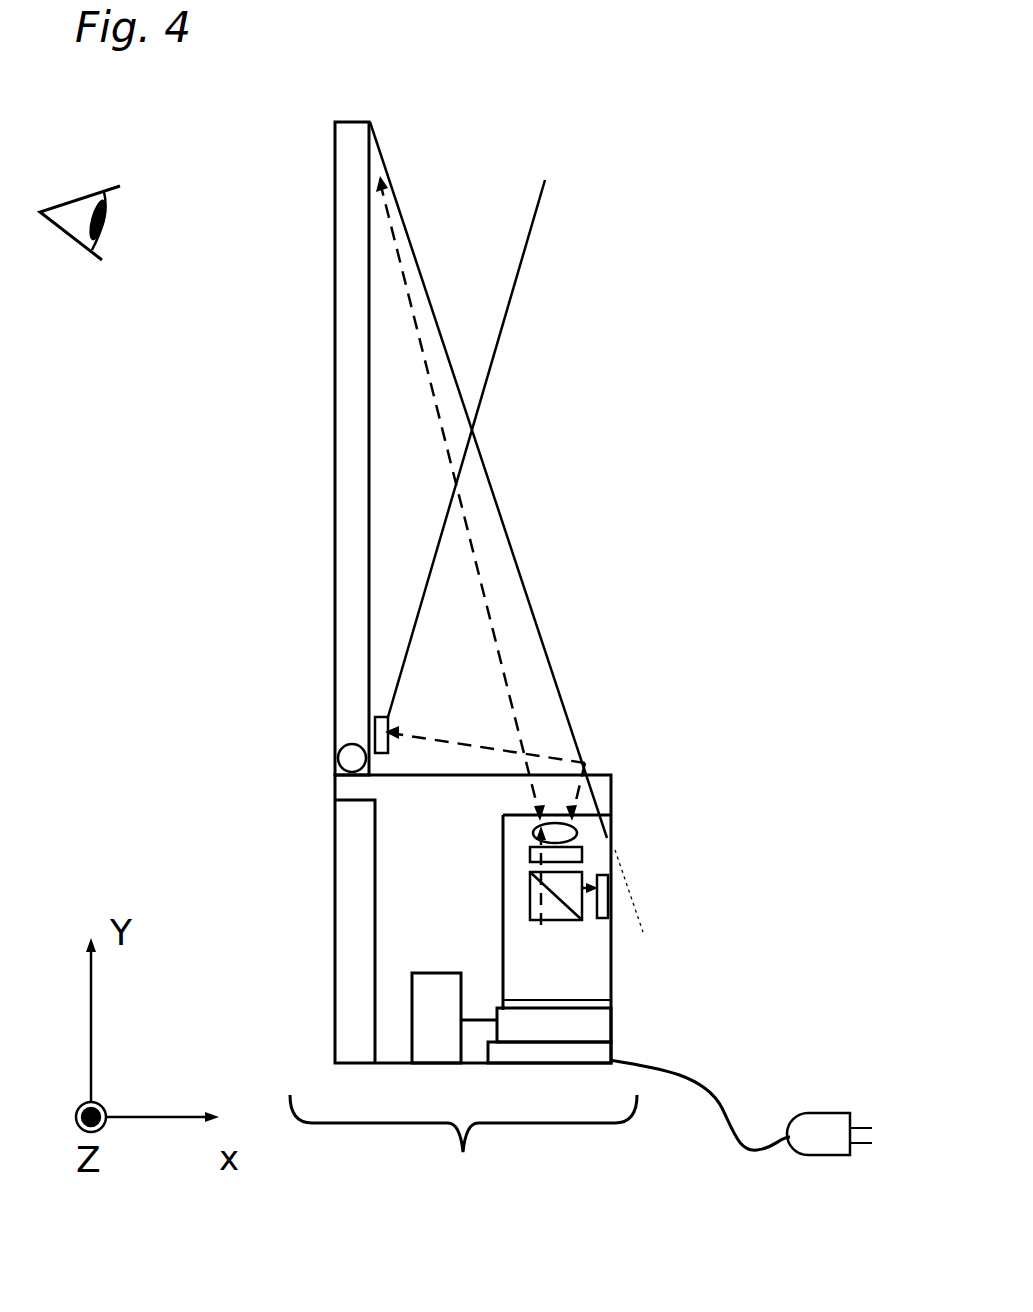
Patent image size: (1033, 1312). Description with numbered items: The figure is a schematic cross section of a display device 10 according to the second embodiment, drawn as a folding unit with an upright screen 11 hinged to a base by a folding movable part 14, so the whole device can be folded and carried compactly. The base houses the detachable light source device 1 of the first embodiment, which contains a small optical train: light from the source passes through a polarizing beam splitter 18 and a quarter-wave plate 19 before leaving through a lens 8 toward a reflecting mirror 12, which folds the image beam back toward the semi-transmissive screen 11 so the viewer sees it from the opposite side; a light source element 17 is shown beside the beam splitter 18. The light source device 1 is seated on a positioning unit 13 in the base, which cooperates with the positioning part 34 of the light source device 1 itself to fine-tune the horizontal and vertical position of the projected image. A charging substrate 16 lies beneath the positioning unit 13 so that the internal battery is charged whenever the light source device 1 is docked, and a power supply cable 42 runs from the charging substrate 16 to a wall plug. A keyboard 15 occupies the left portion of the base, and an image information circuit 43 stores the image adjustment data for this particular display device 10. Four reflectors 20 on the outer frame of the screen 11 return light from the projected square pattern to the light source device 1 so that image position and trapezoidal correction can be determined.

The light source device 1 is at (610, 932).
The lens 8 is at (570, 840).
The display device 10 is at (463, 1149).
The screen 11 is at (356, 322).
The reflecting mirror 12 is at (522, 553).
The positioning unit 13 is at (600, 1028).
The folding movable part 14 is at (343, 746).
The keyboard 15 is at (348, 940).
The charging substrate 16 is at (598, 1062).
The light source 17 is at (613, 893).
The polarizing beam splitter 18 is at (572, 878).
The λ/4 plate 19 is at (566, 856).
The reflectors 20 is at (370, 170).
The positioning part 34 is at (600, 1004).
The power supply cable 42 is at (818, 1147).
The image information circuit 43 is at (437, 985).